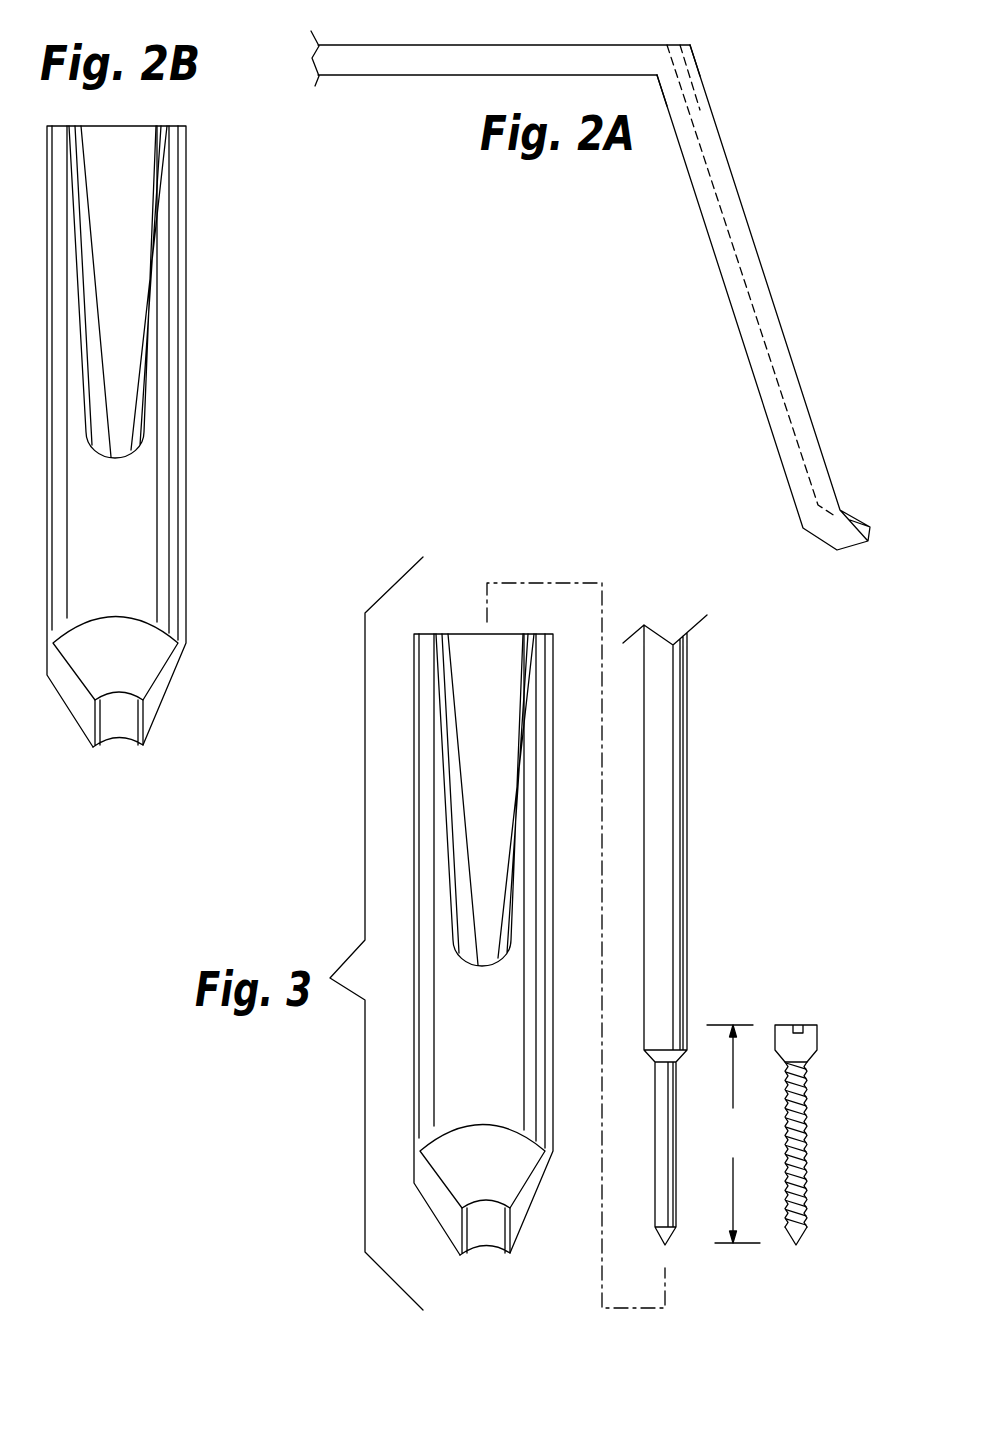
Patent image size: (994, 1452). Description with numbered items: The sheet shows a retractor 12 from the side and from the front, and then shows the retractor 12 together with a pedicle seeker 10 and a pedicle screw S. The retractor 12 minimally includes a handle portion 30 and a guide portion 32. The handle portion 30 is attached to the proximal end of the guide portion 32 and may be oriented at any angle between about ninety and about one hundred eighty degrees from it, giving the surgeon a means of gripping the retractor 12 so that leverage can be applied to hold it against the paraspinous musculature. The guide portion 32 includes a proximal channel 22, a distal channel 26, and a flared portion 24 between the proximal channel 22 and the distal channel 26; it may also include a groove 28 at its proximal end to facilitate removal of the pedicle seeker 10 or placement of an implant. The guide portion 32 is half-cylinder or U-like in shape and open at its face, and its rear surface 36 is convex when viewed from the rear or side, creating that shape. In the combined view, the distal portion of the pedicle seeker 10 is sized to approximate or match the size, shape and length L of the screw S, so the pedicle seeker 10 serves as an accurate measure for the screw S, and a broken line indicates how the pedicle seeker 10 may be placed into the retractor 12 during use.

In FIG. 3, the pedicle seeker 10 is at (700, 1249).
In FIG. 2B, the retractor 12 is at (245, 330).
In FIG. 2A, the retractor 12 is at (645, 261).
In FIG. 3, the retractor 12 is at (481, 1276).
In FIG. 2B, the proximal channel 22 is at (113, 530).
In FIG. 2B, the flared portion 24 is at (130, 677).
In FIG. 2B, the distal channel 26 is at (117, 728).
In FIG. 2B, the groove 28 is at (122, 197).
In FIG. 2A, the handle portion 30 is at (400, 63).
In FIG. 2A, the guide portion 32 is at (757, 338).
In FIG. 2A, the rear surface 36 is at (690, 187).
In FIG. 3, the length L is at (733, 1134).
In FIG. 3, the pedicle screw S is at (808, 1130).